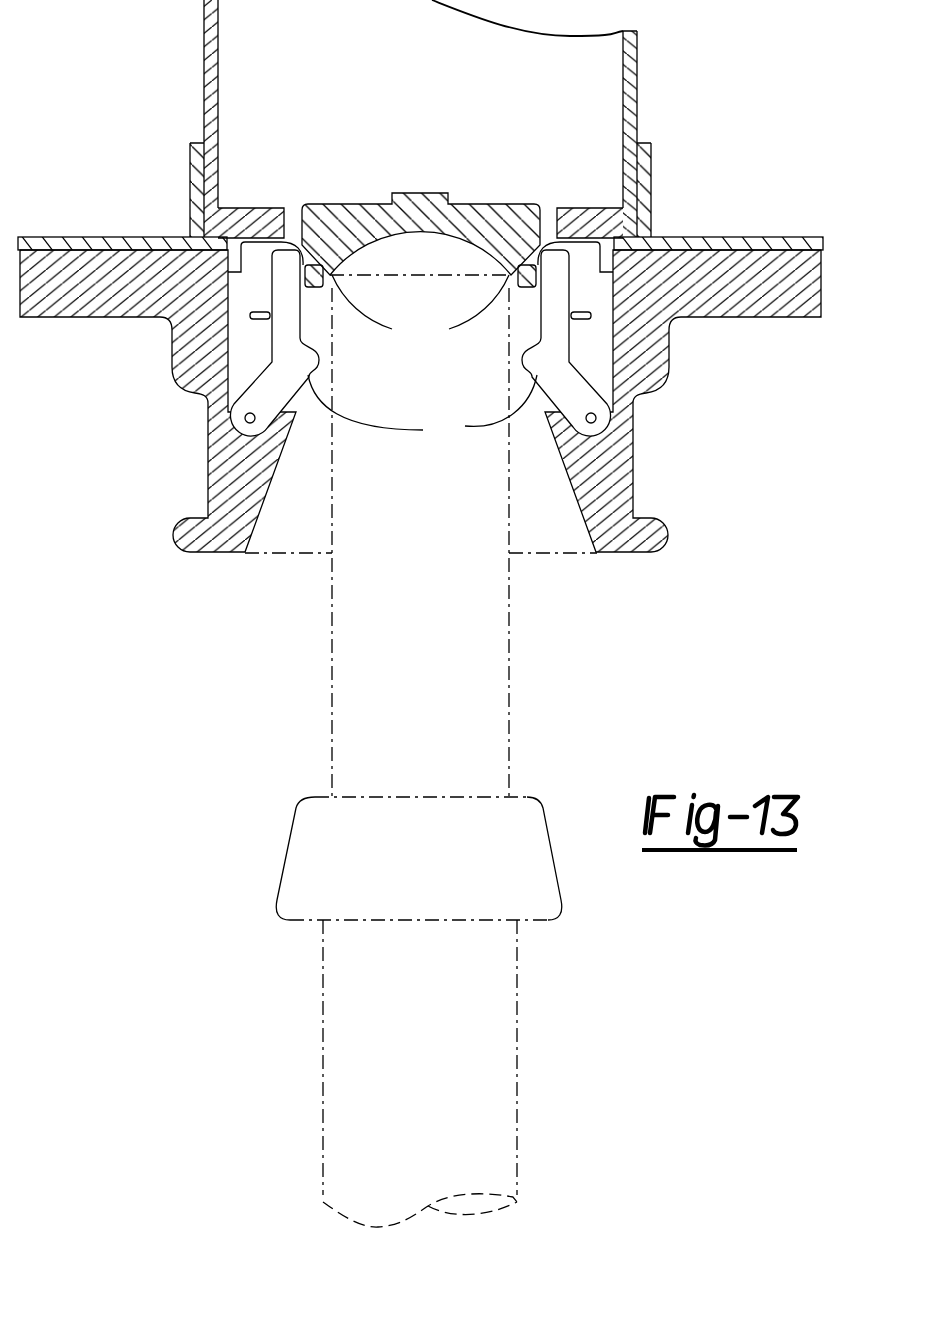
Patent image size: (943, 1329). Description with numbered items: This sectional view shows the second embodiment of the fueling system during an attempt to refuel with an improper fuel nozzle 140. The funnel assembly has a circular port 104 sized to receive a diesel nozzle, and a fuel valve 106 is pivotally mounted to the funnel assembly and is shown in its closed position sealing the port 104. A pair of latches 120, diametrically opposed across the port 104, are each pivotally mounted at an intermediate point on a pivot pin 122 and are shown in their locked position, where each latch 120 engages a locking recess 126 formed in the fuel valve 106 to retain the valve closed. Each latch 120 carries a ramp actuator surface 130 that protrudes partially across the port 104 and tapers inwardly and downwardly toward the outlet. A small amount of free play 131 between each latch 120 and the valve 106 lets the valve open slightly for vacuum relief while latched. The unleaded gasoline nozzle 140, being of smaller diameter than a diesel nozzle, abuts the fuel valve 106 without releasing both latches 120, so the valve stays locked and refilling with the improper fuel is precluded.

The circular port 104 is at (545, 212).
The fuel valve 106 is at (483, 210).
The latch 120 is at (563, 368).
The pivot pin 122 is at (245, 418).
The locking recess 126 is at (294, 243).
The ramp actuator surface 130 is at (422, 409).
The free play 131 is at (420, 309).
The fuel nozzle 140 is at (508, 668).